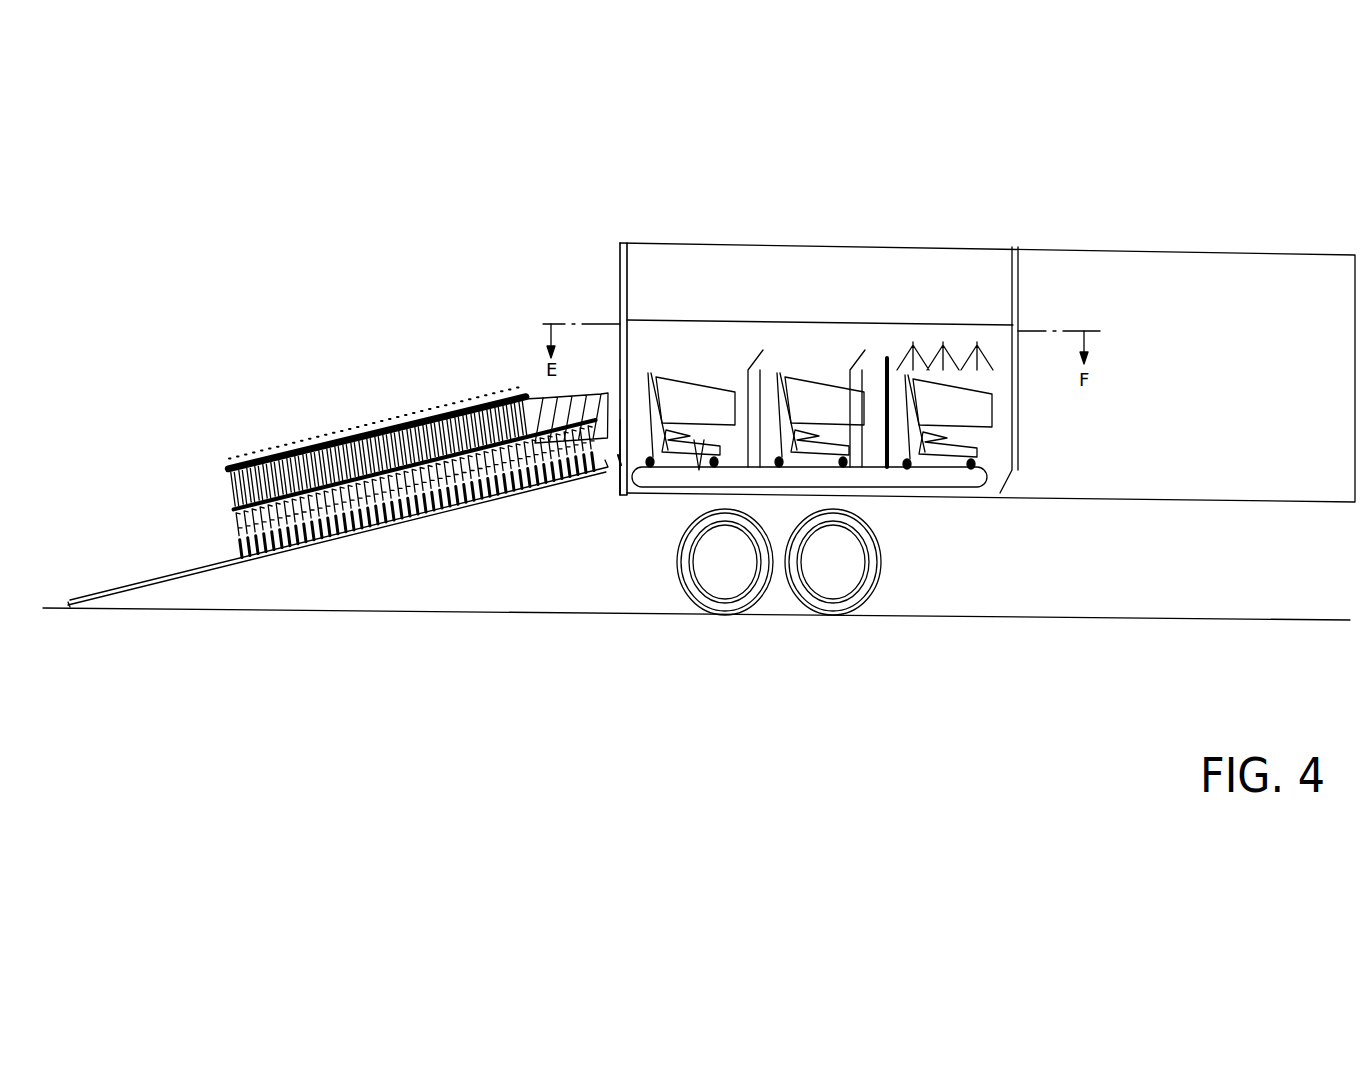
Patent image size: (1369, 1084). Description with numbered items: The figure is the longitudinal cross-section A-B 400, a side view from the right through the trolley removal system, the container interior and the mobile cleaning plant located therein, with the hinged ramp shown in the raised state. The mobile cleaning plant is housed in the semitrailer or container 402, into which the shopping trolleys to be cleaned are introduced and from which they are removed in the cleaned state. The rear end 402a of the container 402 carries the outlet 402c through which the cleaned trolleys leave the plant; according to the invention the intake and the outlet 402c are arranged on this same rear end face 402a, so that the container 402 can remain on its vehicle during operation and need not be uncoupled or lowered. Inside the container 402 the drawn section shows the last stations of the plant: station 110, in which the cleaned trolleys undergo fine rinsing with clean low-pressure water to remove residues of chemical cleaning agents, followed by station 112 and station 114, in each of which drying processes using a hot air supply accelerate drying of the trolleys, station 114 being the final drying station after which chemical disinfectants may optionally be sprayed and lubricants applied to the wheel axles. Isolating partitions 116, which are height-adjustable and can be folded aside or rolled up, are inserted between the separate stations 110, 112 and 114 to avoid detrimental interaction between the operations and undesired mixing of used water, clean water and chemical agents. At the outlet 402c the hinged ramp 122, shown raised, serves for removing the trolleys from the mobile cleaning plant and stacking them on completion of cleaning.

The longitudinal cross-section A-B through the trolley removal system, the container 400 is at (492, 218).
The semitrailer or container 402 is at (1167, 249).
The rear end of the semitrailer or container 402a is at (620, 290).
The outlet 402c is at (621, 366).
The partition 116 is at (862, 356).
The station #4 110 is at (914, 341).
The station #6 114 is at (690, 404).
The station #5 112 is at (819, 403).
The hinged ramp 122 is at (212, 566).